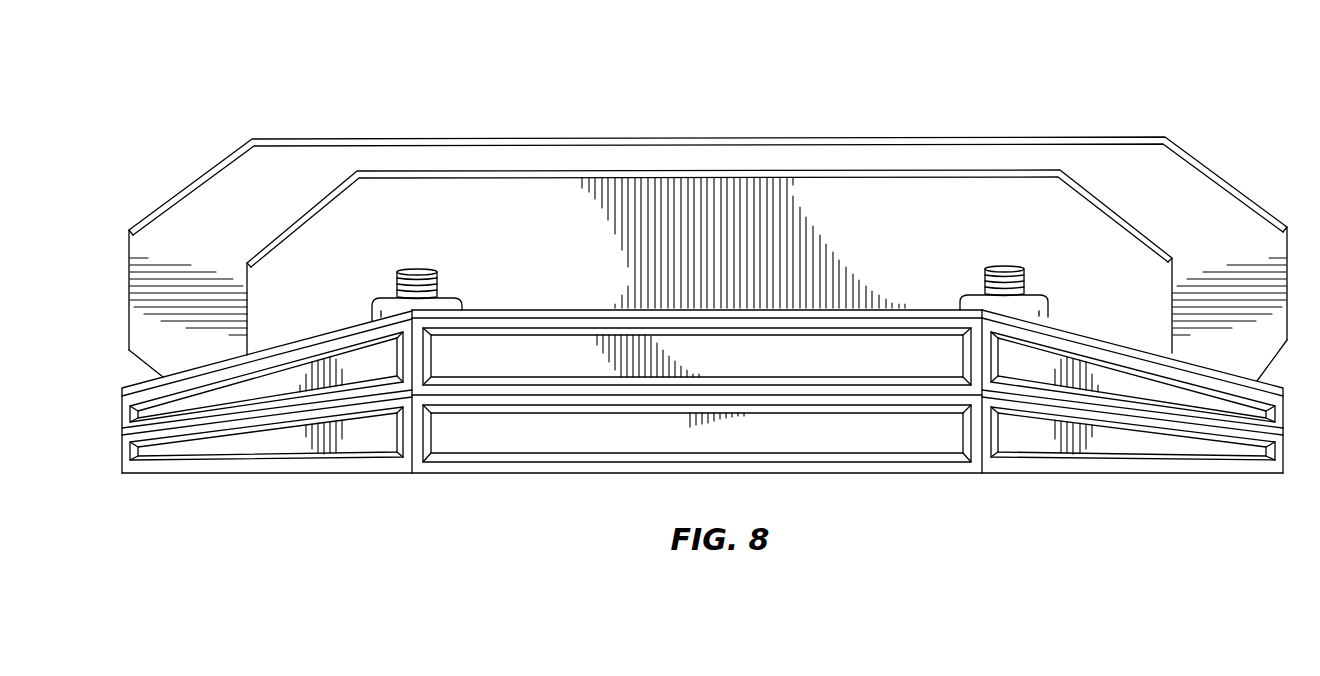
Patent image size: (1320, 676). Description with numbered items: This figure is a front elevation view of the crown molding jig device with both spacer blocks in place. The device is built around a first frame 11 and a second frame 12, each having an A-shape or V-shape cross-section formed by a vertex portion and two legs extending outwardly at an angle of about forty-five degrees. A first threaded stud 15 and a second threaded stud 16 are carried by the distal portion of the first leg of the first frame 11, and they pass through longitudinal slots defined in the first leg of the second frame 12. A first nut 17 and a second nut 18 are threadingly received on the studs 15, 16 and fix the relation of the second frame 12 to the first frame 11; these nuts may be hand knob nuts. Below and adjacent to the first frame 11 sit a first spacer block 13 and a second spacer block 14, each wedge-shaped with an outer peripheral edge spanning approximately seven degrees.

The first frame 11 is at (698, 140).
The second frame 12 is at (300, 220).
The first spacer block 13 is at (548, 383).
The second spacer block 14 is at (383, 462).
The first threaded stud 15 is at (424, 282).
The second threaded stud 16 is at (1010, 271).
The first nut 17 is at (449, 305).
The second nut 18 is at (1047, 310).